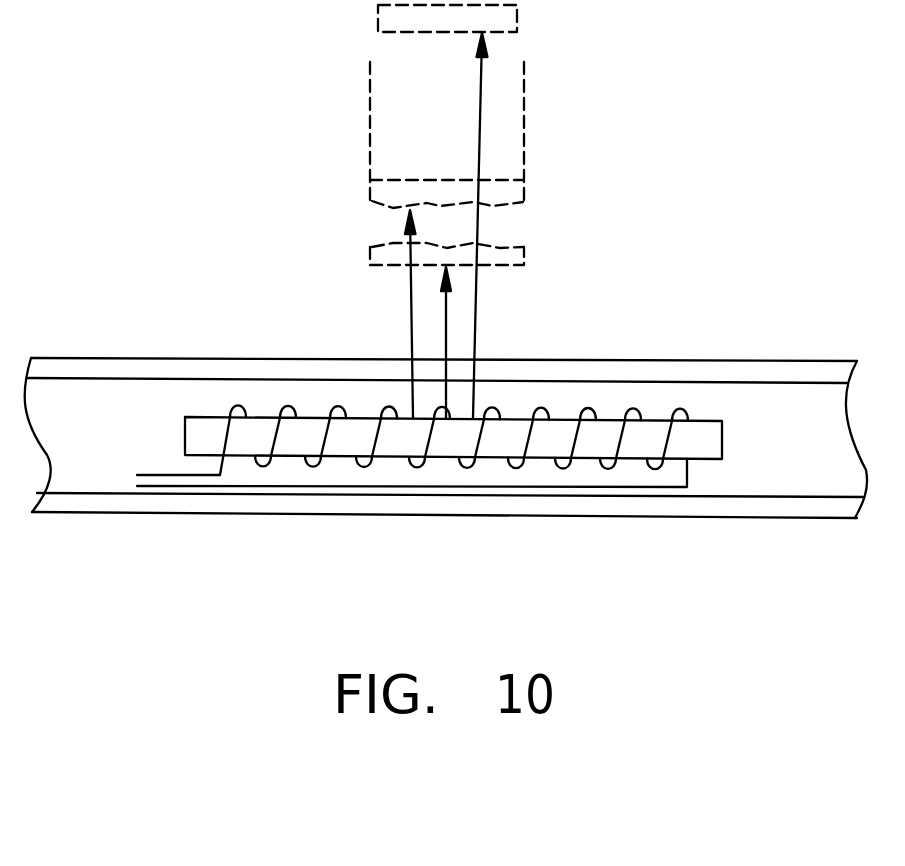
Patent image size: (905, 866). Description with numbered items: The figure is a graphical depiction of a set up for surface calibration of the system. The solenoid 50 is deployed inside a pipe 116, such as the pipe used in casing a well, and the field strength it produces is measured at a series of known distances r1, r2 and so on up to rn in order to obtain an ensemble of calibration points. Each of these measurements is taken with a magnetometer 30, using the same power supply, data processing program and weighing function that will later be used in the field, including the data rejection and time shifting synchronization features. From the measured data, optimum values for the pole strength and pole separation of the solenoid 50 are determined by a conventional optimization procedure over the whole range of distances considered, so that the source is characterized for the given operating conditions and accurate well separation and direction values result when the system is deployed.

The pipe 116 is at (677, 360).
The solenoid 50 is at (707, 460).
The magnetometer 30 is at (495, 33).
The known distance rn is at (480, 123).
The known distance r2 is at (411, 312).
The known distance r1 is at (447, 320).